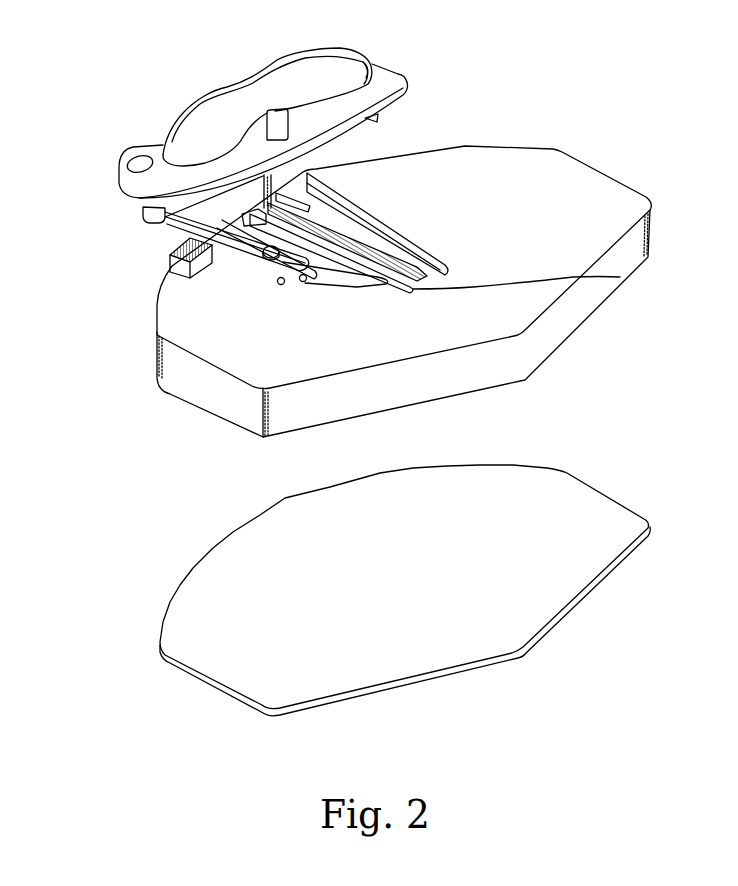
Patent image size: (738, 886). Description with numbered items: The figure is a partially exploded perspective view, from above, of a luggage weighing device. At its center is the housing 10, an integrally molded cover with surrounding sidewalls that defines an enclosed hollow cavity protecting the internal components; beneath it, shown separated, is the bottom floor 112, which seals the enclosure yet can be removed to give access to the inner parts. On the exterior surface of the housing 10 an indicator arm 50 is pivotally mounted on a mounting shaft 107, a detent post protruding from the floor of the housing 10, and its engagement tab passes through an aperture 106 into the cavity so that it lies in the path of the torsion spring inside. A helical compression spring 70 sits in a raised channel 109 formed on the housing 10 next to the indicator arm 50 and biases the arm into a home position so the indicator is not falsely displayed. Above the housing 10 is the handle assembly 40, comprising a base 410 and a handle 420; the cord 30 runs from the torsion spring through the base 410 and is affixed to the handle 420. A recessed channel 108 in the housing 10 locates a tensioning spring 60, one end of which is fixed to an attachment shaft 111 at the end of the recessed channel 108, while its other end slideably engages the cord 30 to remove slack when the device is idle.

The housing 10 is at (646, 129).
The cord 30 is at (290, 176).
The handle assembly 40 is at (239, 117).
The indicator arm 50 is at (147, 231).
The tensioning spring 60 is at (353, 286).
The compression spring 70 is at (132, 266).
The aperture 106 is at (267, 277).
The mounting shaft 107 is at (257, 260).
The recessed channel 108 is at (331, 217).
The raised channel 109 is at (183, 263).
The attachment shaft 111 is at (620, 277).
The bottom floor 112 is at (548, 497).
The base 410 is at (147, 183).
The handle 420 is at (203, 113).